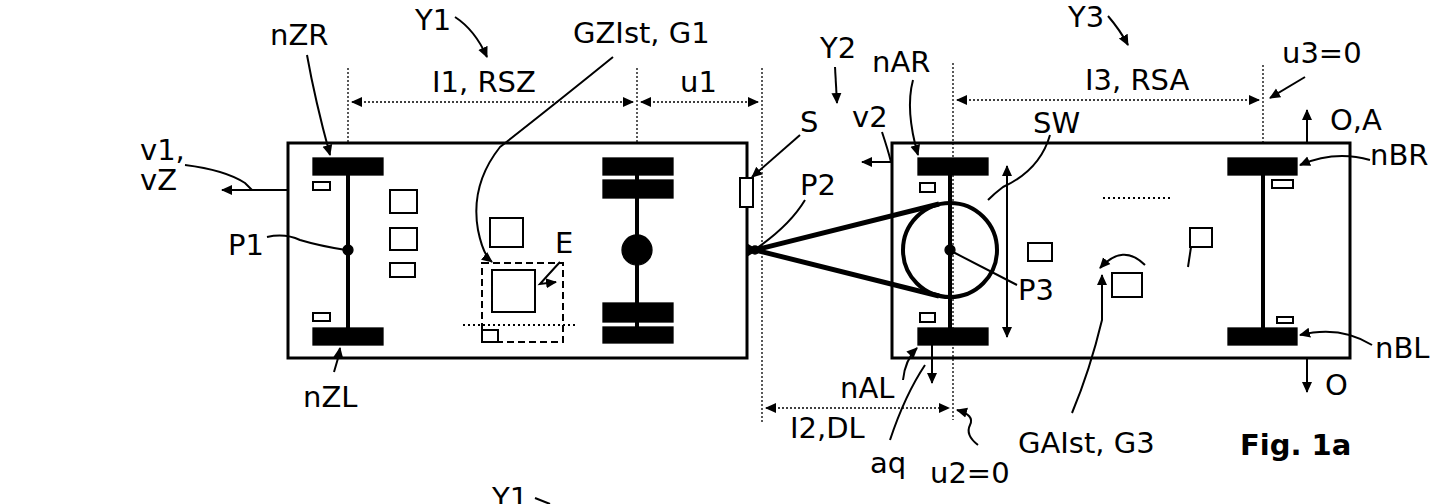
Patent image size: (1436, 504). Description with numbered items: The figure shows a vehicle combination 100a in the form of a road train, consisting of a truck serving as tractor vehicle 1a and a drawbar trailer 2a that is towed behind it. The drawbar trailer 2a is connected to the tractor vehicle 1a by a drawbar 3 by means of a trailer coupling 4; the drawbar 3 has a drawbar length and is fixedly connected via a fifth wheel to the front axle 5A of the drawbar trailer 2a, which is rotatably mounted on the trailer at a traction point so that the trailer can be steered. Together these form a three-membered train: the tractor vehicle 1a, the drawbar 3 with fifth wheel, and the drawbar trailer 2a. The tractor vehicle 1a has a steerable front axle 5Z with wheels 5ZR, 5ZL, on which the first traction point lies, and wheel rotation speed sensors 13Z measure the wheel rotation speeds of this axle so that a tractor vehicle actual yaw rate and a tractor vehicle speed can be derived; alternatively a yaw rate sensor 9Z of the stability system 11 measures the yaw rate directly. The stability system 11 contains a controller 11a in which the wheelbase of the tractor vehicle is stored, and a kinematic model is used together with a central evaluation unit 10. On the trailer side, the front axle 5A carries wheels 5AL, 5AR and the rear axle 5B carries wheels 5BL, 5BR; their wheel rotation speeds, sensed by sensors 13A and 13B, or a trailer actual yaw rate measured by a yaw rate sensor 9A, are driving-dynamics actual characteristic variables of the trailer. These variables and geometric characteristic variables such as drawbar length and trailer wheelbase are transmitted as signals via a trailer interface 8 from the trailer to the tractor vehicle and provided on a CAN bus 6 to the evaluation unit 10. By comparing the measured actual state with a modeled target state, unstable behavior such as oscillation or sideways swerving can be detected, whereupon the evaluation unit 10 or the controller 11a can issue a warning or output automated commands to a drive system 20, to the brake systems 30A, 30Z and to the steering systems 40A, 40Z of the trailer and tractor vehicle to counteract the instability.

The vehicle combination 100a is at (258, 112).
The tractor vehicle 1a is at (287, 148).
The drawbar trailer 2a is at (1350, 200).
The drawbar 3 is at (828, 234).
The trailer coupling 4 is at (758, 257).
The steerable front axle of the tractor vehicle 5Z is at (352, 288).
The right front wheel of the tractor vehicle 5ZR is at (373, 158).
The left front wheel of the tractor vehicle 5ZL is at (372, 346).
The front axle of the drawbar trailer 5A is at (1008, 213).
The right front wheel of the trailer 5AR is at (985, 158).
The left front wheel of the trailer 5AL is at (980, 346).
The rear axle of the trailer 5B is at (1262, 222).
The right rear wheel of the trailer 5BR is at (1245, 158).
The left rear wheel of the trailer 5BL is at (1240, 346).
The CAN bus 6 is at (570, 325).
The trailer interface 8 is at (739, 192).
The yaw rate sensor of the tractor vehicle 9Z is at (515, 217).
The yaw rate sensor of the trailer 9A is at (1128, 297).
The central evaluation unit 10 is at (527, 270).
The stability system 11 is at (548, 342).
The controller 11a is at (490, 342).
The wheel rotation speed sensors 13Z is at (312, 317).
The towing vehicle front wheel speed sensors 13A is at (920, 318).
The towing vehicle rear wheel speed sensors 13B is at (1294, 319).
The drive system 20 is at (444, 188).
The brake system of the tractor vehicle 30Z is at (390, 233).
The steering system of the tractor vehicle 40Z is at (390, 272).
The brake system of the trailer 30A is at (1198, 267).
The steering system of the trailer 40A is at (1052, 250).